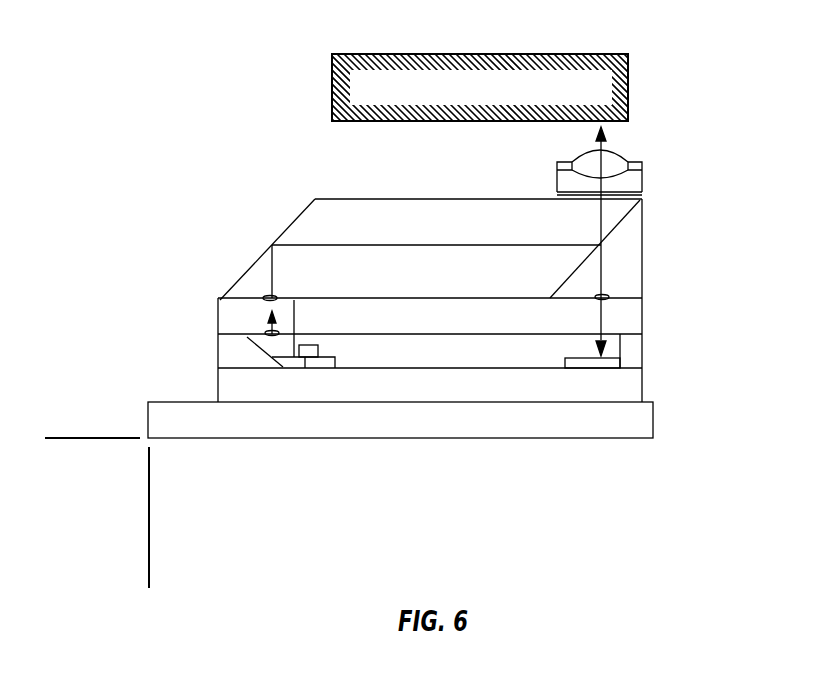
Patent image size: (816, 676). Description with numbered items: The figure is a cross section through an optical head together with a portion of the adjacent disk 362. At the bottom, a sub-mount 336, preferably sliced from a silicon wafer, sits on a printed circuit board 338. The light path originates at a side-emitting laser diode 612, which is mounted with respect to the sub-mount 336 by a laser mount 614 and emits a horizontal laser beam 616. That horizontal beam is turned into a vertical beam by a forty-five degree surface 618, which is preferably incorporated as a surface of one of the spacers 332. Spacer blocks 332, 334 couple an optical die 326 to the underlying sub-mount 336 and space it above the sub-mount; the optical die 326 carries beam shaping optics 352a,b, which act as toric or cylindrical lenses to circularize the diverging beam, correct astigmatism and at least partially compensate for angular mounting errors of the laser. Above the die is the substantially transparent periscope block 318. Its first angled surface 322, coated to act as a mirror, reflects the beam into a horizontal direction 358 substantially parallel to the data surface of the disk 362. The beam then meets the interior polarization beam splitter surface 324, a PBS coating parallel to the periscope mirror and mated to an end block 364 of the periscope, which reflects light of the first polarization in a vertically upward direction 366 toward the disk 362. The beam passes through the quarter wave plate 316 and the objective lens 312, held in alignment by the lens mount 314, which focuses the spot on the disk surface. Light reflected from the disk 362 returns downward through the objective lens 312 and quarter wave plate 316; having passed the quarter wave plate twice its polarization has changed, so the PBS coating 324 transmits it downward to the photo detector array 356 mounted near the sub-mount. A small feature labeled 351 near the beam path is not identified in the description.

The disk 362 is at (373, 53).
The objective lens 312 is at (613, 162).
The lens mount 314 is at (643, 178).
The quarter wave plate 316 is at (643, 198).
The periscope block 318 is at (316, 223).
The first angled surface 322 is at (278, 240).
The horizontal direction 358 is at (381, 240).
The vertically upward direction 366 is at (597, 228).
The polarization beam splitter surface 324 is at (623, 218).
The end block 364 is at (628, 282).
The aperture 351 is at (612, 298).
The beam shaping optics 352a,b is at (270, 332).
The optical die 326 is at (218, 320).
The spacer block 332 is at (218, 357).
The spacer block 334 is at (645, 355).
The sub-mount 336 is at (645, 385).
The printed circuit board 338 is at (655, 415).
The photo detector array 356 is at (592, 367).
The laser diode 612 is at (308, 347).
The laser mount 614 is at (318, 363).
The horizontal laser beam 616 is at (294, 300).
The 45° surface 618 is at (262, 352).